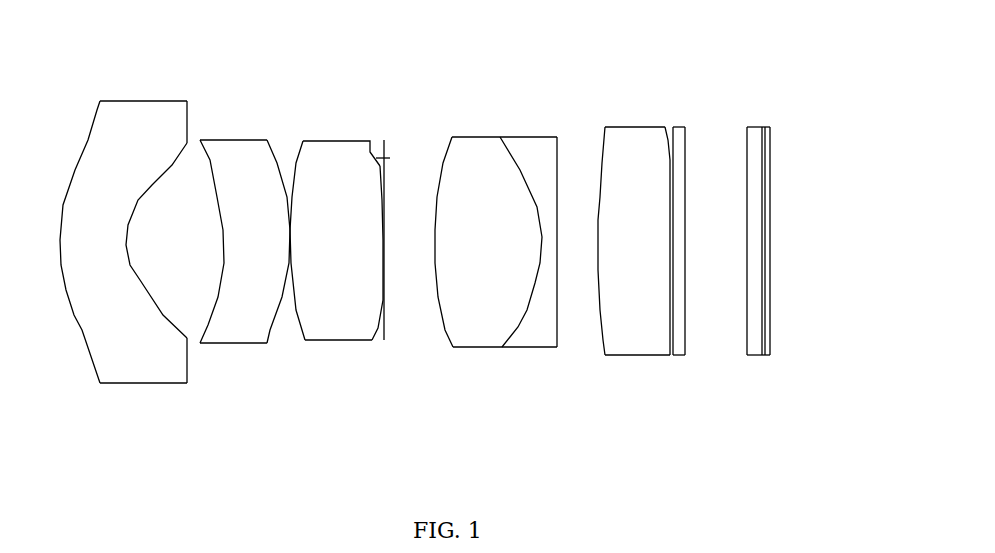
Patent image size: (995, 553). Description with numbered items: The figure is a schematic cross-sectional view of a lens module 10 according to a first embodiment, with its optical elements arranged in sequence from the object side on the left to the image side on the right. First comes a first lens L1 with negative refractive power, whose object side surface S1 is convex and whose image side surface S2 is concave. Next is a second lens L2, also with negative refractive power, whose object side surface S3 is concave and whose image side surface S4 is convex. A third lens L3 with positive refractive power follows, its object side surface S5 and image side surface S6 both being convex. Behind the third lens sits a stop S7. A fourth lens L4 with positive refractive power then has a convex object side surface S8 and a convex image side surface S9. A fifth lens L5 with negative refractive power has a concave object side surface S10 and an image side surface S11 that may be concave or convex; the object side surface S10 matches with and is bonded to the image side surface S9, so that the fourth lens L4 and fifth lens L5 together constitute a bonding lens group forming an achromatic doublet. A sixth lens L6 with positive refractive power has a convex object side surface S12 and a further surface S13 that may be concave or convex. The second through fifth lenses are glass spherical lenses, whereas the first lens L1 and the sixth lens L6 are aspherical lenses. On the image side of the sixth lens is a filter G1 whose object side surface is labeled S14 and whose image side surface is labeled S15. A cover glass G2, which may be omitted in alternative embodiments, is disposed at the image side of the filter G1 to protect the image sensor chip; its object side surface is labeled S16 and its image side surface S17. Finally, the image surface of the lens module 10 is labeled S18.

The lens module 10 is at (82, 43).
The first lens L1 is at (147, 101).
The second lens L2 is at (233, 140).
The third lens L3 is at (330, 141).
The fourth lens L4 is at (478, 137).
The fifth lens L5 is at (530, 137).
The sixth lens L6 is at (635, 127).
The filter G1 is at (680, 127).
The cover glass G2 is at (757, 127).
The object side surface of first lens S1 is at (69, 287).
The image side surface of first lens S2 is at (156, 311).
The object side surface of second lens S3 is at (205, 310).
The image side surface of second lens S4 is at (275, 313).
The object side surface of third lens S5 is at (295, 293).
The image side surface of third lens S6 is at (357, 311).
The stop S7 is at (384, 340).
The object side surface of fourth lens S8 is at (425, 298).
The image side surface of fourth lens S9 is at (498, 291).
The object side surface of fifth lens S10 is at (521, 373).
The image side surface of fifth lens S11 is at (555, 307).
The object side surface of sixth lens S12 is at (594, 301).
The image side surface of sixth lens S13 is at (656, 301).
The object side surface of filter S14 is at (686, 298).
The image side surface of filter S15 is at (718, 301).
The object side surface of cover glass S16 is at (760, 285).
The image side surface of cover glass S17 is at (787, 281).
The image surface S18 is at (818, 277).